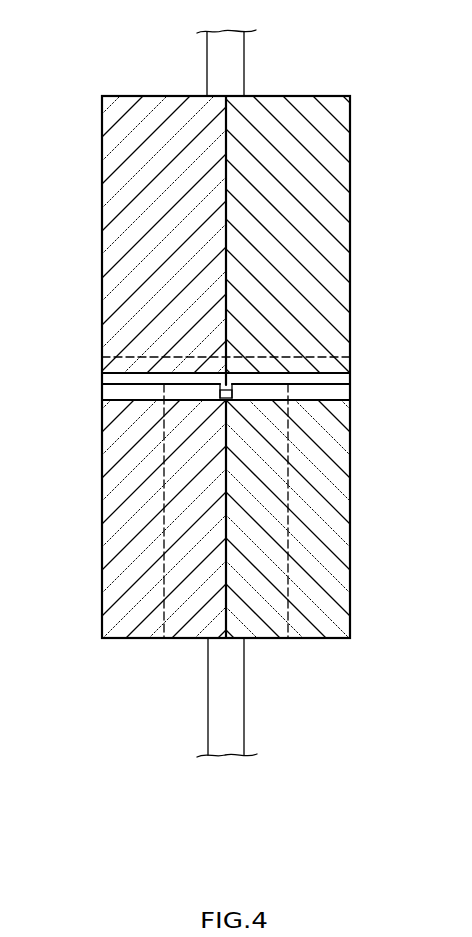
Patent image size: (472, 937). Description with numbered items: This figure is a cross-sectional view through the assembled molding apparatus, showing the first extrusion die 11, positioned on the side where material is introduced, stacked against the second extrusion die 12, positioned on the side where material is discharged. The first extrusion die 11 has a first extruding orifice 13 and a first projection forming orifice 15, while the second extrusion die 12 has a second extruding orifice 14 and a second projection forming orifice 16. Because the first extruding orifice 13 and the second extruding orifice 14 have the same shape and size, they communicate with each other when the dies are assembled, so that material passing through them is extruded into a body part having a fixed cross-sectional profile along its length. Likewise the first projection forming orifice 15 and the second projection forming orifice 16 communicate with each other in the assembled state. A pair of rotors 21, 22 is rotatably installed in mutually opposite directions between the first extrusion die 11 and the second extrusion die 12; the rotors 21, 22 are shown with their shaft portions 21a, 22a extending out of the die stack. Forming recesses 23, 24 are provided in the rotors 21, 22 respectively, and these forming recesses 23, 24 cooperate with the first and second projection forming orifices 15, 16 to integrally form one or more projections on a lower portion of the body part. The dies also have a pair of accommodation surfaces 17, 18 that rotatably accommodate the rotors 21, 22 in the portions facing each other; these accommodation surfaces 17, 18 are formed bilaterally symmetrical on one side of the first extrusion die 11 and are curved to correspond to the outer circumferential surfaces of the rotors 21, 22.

The first extrusion die 11 is at (106, 213).
The second extrusion die 12 is at (348, 213).
The first extruding orifice 13 is at (105, 376).
The second extruding orifice 14 is at (345, 378).
The first projection forming orifice 15 is at (105, 392).
The second projection forming orifice 16 is at (345, 392).
The accommodation surface 17 is at (226, 539).
The accommodation surface 18 is at (173, 595).
The rotor 21 is at (226, 569).
The rotor 22 is at (187, 639).
The first lower die shaft 21a is at (286, 697).
The second lower die shaft 22a is at (236, 725).
The forming recess 23 is at (331, 424).
The forming recess 24 is at (233, 394).